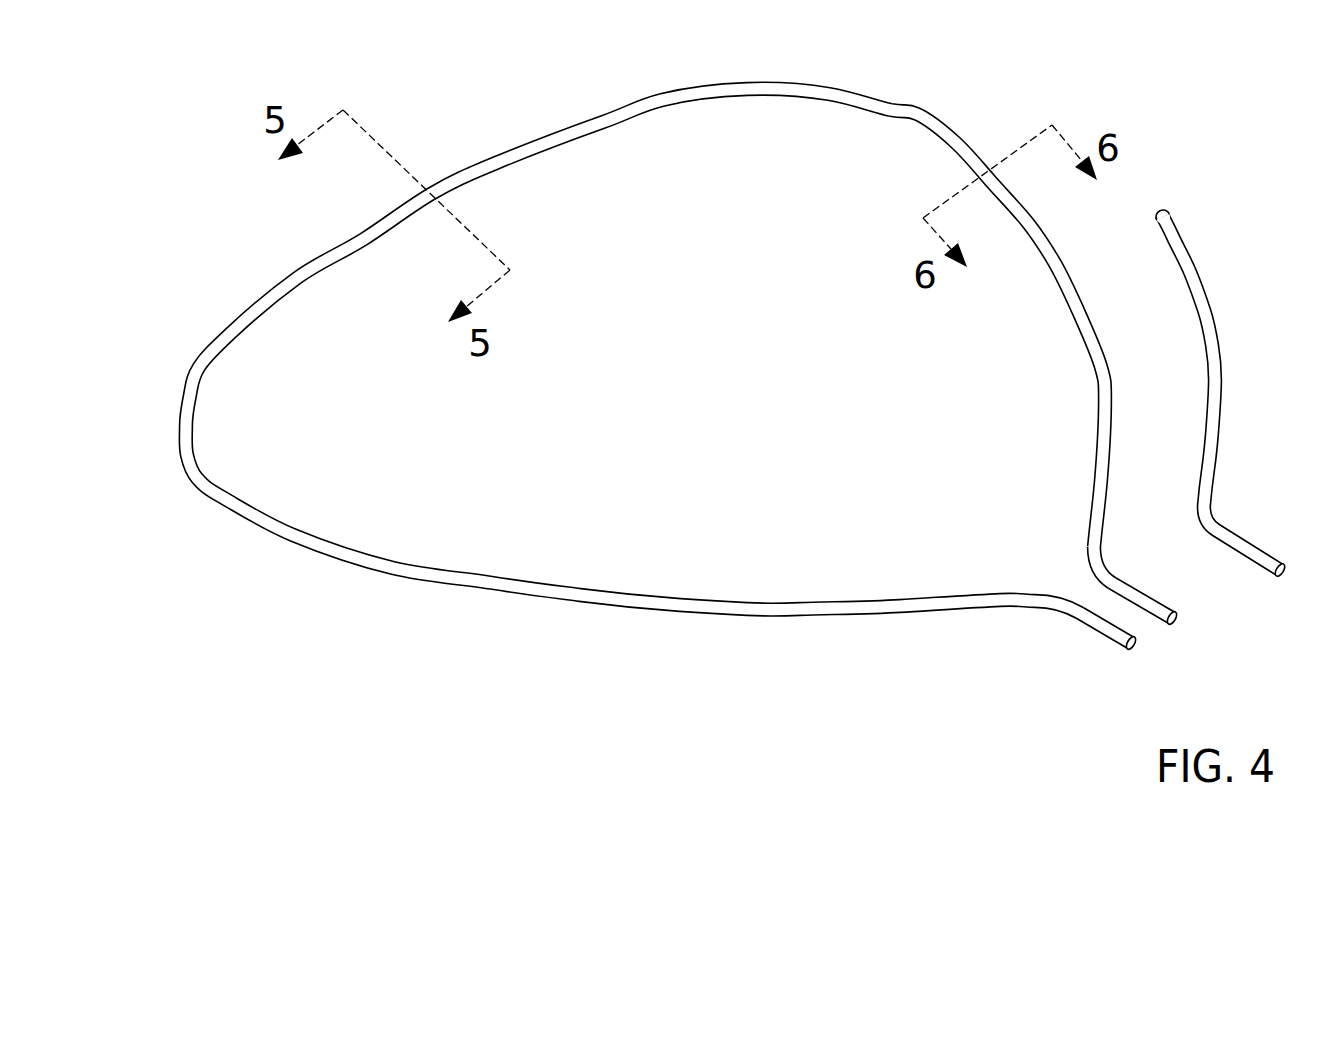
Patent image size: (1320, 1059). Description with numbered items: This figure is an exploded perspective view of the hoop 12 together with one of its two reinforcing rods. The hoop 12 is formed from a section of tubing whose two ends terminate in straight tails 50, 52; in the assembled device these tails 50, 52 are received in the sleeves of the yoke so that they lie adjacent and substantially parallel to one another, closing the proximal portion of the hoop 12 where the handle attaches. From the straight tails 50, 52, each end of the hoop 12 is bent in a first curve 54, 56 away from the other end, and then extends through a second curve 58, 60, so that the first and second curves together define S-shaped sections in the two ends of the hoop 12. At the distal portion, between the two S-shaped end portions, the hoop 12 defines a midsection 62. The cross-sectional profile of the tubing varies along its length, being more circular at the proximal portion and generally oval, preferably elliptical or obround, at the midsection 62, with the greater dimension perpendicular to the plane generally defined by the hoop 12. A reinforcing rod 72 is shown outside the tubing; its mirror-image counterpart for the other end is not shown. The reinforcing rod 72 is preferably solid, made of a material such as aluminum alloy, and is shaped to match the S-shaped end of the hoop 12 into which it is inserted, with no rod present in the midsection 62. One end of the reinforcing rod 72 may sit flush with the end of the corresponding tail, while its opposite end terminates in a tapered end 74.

The hoop 12 is at (726, 383).
The straight tail 50 is at (1097, 635).
The straight tail 52 is at (1167, 610).
The first curve 54 is at (1033, 612).
The first curve 56 is at (1102, 558).
The second curve 58 is at (493, 590).
The second curve 60 is at (1058, 262).
The midsection 62 is at (565, 128).
The reinforcing rod 72 is at (1227, 366).
The tapered end 74 is at (1170, 213).